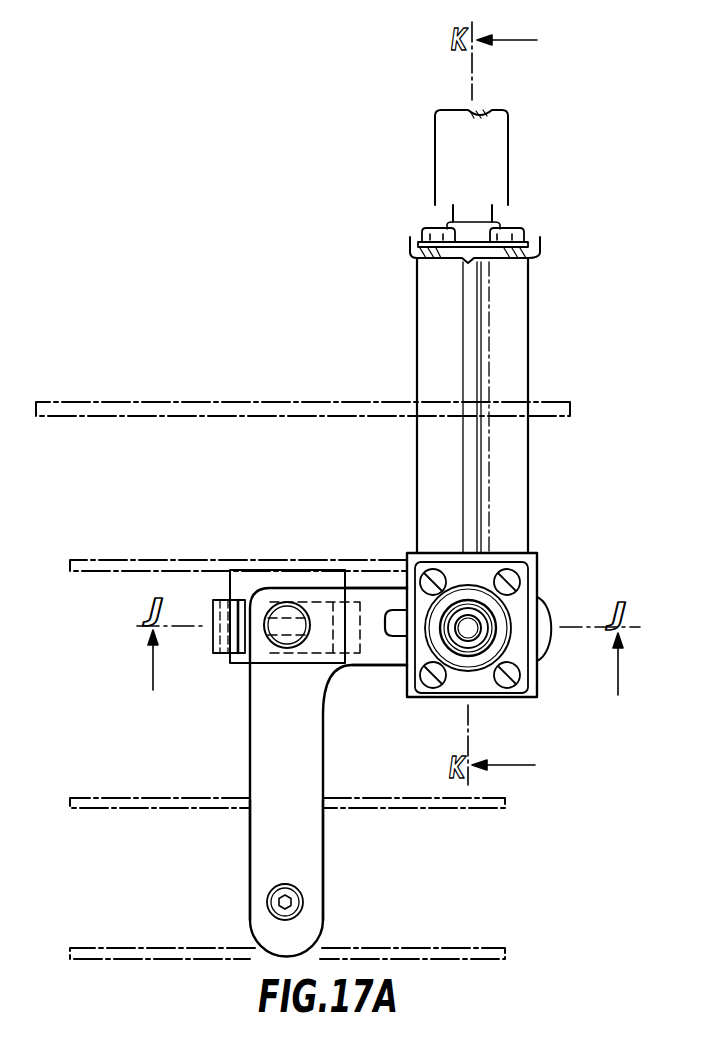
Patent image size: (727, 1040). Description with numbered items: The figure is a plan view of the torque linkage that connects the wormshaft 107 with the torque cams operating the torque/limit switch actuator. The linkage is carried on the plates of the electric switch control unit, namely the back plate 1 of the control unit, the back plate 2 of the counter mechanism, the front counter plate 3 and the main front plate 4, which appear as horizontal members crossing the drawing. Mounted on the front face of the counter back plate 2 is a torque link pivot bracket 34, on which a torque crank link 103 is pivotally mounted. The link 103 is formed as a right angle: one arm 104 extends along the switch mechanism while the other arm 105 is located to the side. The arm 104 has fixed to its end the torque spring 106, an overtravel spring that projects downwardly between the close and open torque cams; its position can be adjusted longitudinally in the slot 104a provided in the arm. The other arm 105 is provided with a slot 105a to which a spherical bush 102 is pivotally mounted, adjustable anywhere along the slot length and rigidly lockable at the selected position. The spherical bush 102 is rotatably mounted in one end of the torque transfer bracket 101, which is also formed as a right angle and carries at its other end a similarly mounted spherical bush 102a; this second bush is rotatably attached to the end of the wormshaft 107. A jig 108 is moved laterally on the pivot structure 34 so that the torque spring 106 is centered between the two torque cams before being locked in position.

The back plate of the control unit 1 is at (238, 408).
The back plate of the counter mechanism 2 is at (207, 563).
The front counter plate 3 is at (161, 797).
The main front plate 4 is at (136, 947).
The torque link pivot bracket 34 is at (256, 586).
The torque transfer bracket 101 is at (510, 494).
The spherical bush 102 is at (539, 592).
The spherical bush 102a is at (519, 232).
The torque crank link 103 is at (250, 737).
The arm of the torque crank link 104 is at (300, 847).
The slot 104a is at (282, 922).
The arm of the torque crank link 105 is at (386, 648).
The slot 105a is at (402, 606).
The torque spring 106 is at (300, 906).
The wormshaft 107 is at (447, 171).
The jig 108 is at (222, 637).